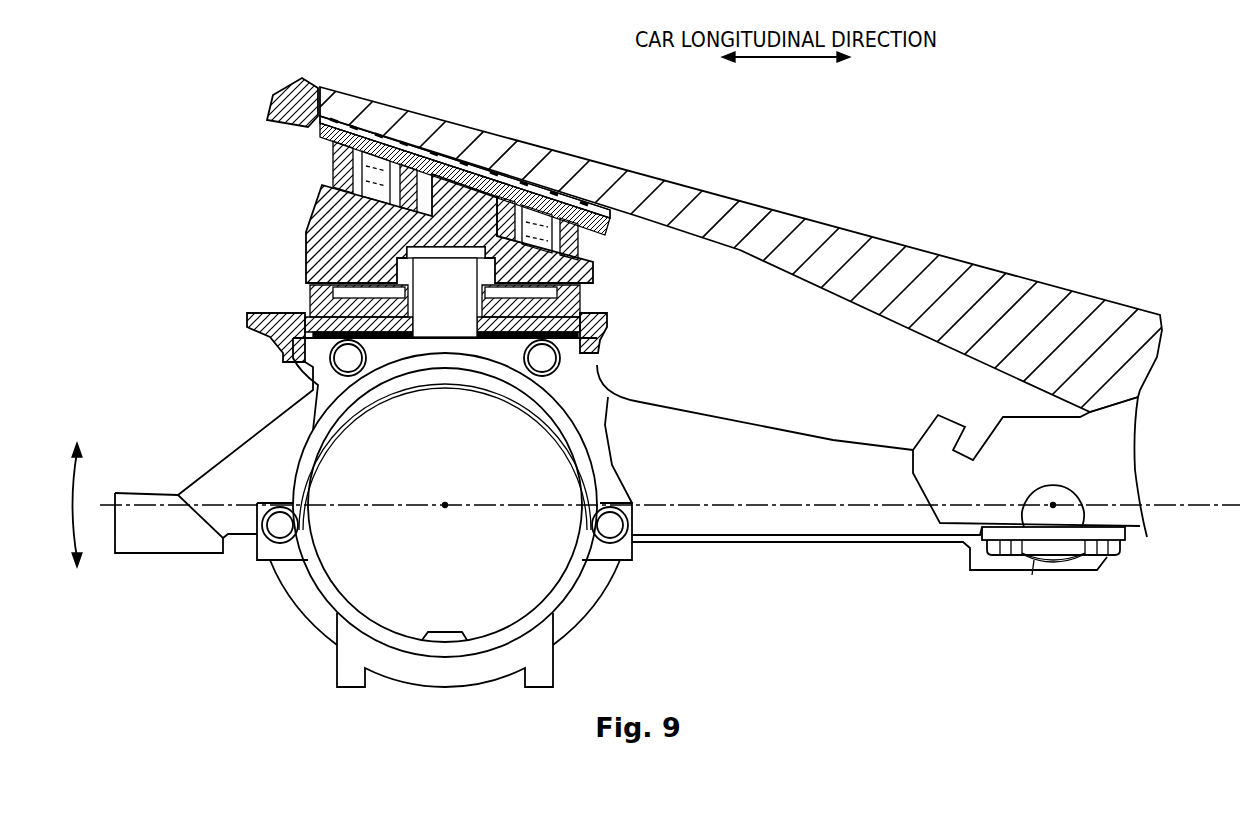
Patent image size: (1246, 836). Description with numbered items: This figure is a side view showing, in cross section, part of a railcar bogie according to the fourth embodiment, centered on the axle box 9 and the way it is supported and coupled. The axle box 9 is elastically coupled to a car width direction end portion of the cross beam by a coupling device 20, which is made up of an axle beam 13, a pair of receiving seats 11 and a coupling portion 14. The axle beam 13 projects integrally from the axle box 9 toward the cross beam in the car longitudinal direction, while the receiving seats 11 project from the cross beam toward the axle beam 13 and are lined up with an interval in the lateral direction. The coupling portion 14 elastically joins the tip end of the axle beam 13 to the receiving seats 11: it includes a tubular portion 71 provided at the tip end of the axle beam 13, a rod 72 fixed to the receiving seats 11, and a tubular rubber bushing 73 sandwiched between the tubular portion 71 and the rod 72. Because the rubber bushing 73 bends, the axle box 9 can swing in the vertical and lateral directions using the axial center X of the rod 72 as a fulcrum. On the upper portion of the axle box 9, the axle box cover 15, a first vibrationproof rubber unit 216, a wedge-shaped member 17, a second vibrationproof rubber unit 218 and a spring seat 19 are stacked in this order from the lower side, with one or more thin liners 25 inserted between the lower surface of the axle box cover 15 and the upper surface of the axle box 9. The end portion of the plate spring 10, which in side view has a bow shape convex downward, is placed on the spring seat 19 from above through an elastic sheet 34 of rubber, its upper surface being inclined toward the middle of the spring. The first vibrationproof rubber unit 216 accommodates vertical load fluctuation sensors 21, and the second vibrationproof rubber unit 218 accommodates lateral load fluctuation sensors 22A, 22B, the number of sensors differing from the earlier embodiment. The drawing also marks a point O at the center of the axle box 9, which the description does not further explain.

The axle box 9 is at (293, 607).
The plate spring 10 is at (834, 228).
The receiving seats 11 is at (1107, 450).
The axle beam 13 is at (847, 542).
The coupling portion 14 is at (978, 575).
The axle box cover 15 is at (600, 360).
The wedge-shaped member 17 is at (306, 207).
The spring seat 19 is at (300, 82).
The coupling device 20 is at (926, 584).
The vertical load fluctuation sensors 21 is at (358, 291).
The lateral load fluctuation sensor 22A is at (387, 132).
The lateral load fluctuation sensor 22B is at (465, 167).
The liners 25 is at (513, 340).
The elastic sheet 34 is at (615, 215).
The tubular portion 71 is at (1100, 563).
The rod 72 is at (1067, 497).
The rubber bushing 73 is at (1032, 575).
The first vibrationproof rubber unit 216 is at (308, 293).
The second vibrationproof rubber unit 218 is at (332, 157).
The rotation center O is at (445, 505).
The axial center X is at (1053, 507).